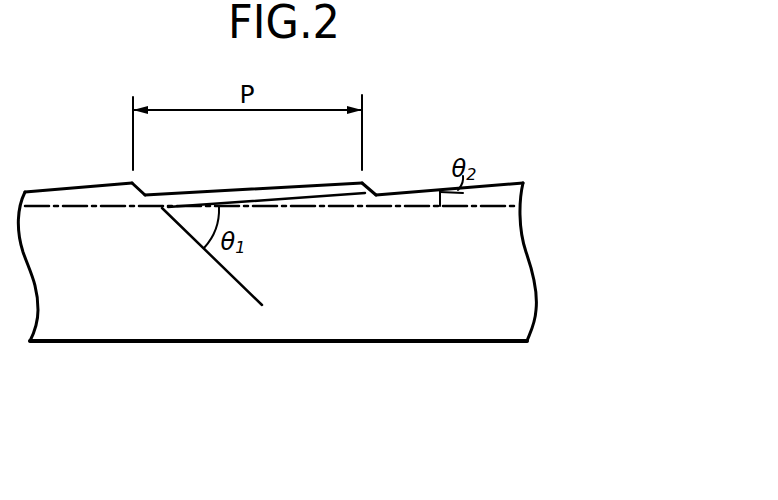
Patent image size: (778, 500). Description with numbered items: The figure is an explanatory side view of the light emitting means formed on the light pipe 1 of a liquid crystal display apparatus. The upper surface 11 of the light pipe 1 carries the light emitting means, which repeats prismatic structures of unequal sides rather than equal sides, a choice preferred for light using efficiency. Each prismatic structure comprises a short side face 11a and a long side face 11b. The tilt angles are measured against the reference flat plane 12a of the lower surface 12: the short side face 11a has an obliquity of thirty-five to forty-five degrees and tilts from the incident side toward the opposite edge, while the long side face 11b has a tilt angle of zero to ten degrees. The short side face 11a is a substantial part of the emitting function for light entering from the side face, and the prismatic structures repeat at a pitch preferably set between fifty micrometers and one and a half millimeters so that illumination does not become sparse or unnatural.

The light pipe 1 is at (458, 287).
The upper surface formed with the light emitting means 11 is at (385, 178).
The short side face 11a is at (142, 195).
The long side face 11b is at (247, 190).
The lower surface 12 is at (380, 343).
The reference flat plane 12a is at (347, 207).